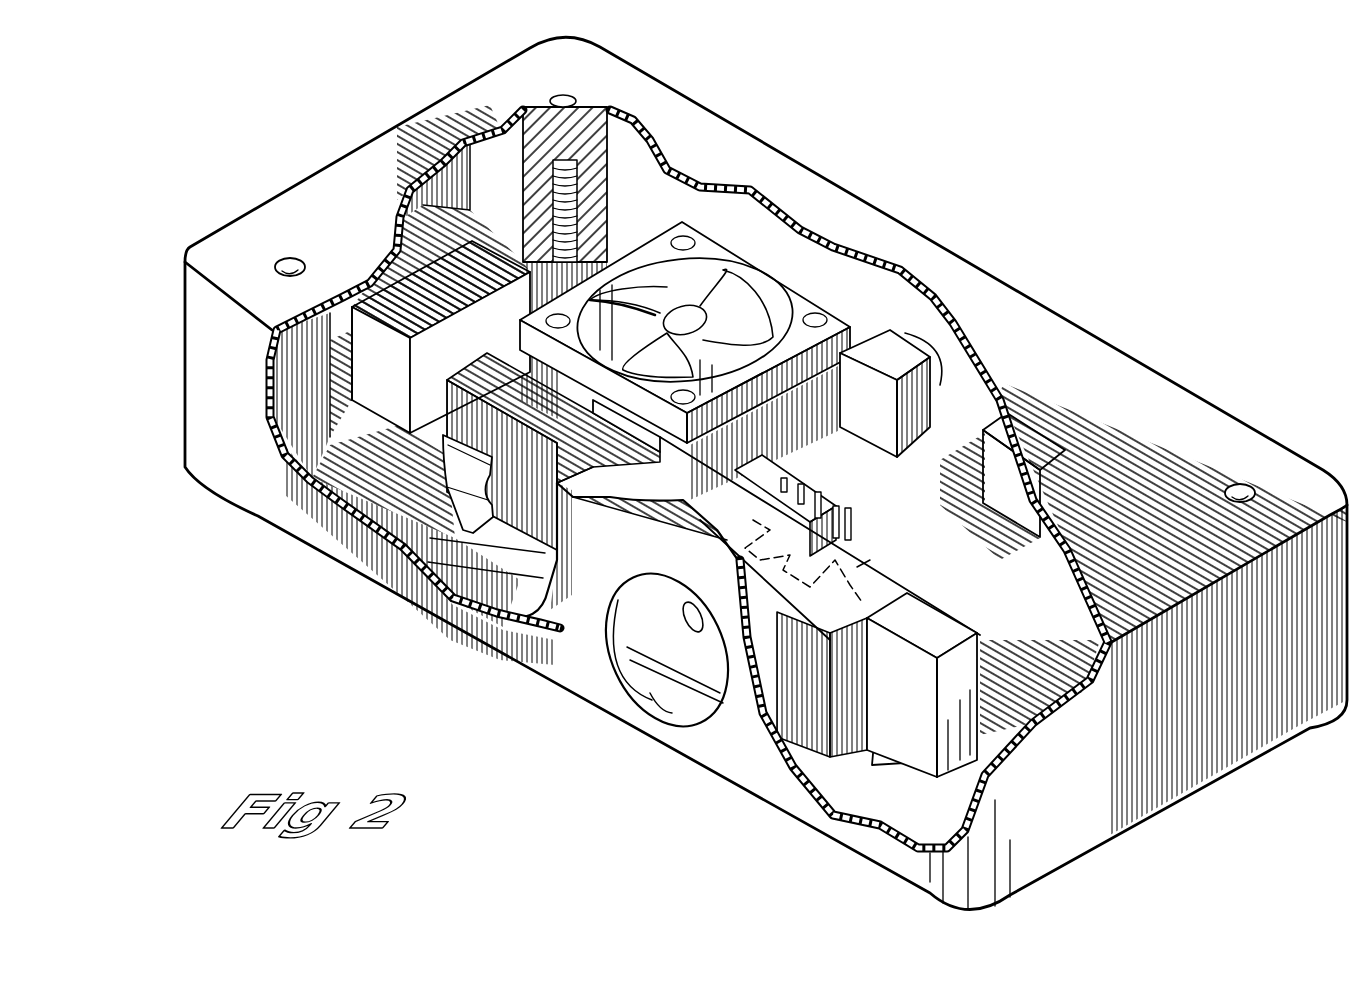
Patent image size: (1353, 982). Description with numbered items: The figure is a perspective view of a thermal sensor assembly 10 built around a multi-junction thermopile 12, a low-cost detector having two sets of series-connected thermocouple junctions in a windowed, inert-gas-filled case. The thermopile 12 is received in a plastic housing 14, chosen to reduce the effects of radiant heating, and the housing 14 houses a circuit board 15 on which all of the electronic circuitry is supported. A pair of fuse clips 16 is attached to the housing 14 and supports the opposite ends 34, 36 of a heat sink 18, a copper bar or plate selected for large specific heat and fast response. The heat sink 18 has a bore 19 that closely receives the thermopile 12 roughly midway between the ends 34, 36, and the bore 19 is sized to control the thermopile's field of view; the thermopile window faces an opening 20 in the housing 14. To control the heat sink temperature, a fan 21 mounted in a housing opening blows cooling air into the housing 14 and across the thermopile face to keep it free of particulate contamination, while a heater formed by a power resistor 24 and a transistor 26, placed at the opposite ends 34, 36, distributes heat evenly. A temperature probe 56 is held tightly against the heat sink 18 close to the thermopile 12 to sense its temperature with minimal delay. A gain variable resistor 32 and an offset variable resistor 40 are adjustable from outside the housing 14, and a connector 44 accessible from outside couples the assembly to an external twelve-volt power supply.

The thermal sensor assembly 10 is at (1266, 808).
The multi-junction thermopile 12 is at (675, 623).
The housing 14 is at (1212, 433).
The circuit board 15 is at (1042, 583).
The fuse clips 16 is at (465, 535).
The heat sink 18 is at (940, 633).
The bore 19 is at (762, 527).
The opening 20 is at (650, 700).
The fan 21 is at (745, 440).
The power resistor 24 is at (612, 413).
The transistor 26 is at (868, 572).
The variable resistor 32 is at (905, 358).
The end of heat sink 34 is at (955, 680).
The end of heat sink 36 is at (440, 402).
The variable resistor 40 is at (1015, 433).
The connector 44 is at (427, 300).
The temperature probe 56 is at (770, 493).